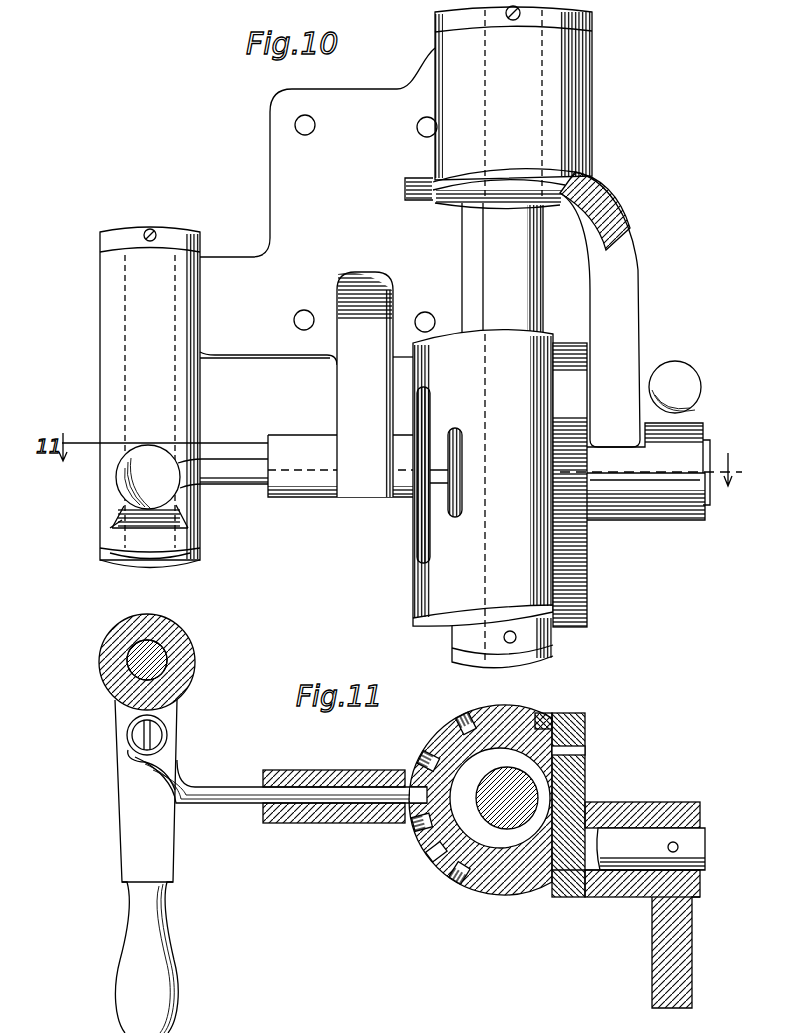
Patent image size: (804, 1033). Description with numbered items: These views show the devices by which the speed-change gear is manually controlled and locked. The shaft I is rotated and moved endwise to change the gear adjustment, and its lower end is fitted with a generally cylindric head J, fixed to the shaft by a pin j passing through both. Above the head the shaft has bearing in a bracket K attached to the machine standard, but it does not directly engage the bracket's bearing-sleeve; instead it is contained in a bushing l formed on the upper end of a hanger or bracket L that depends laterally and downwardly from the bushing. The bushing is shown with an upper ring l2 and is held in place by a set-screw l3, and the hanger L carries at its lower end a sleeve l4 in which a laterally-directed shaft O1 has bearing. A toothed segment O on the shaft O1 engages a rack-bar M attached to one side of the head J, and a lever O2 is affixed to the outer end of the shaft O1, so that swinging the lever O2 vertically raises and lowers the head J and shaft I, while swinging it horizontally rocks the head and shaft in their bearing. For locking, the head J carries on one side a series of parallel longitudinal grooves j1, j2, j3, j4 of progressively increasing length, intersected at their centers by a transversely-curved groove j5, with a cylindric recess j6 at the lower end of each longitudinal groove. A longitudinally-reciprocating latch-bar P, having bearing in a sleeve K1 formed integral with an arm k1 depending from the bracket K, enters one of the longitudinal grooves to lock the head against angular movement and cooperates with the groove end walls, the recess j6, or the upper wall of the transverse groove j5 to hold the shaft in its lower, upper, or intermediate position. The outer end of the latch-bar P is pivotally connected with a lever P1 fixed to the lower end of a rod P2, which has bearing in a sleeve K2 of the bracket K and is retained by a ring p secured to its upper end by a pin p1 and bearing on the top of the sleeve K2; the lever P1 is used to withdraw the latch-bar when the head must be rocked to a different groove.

In FIG. 10, the cylindrical bearing h is at (580, 92).
In FIG. 10, the bracket K is at (318, 206).
In FIG. 10, the sleeve K1 is at (313, 447).
In FIG. 11, the sleeve K1 is at (283, 772).
In FIG. 10, the sleeve K2 is at (100, 352).
In FIG. 11, the sleeve K2 is at (188, 690).
In FIG. 10, the arm k1 is at (365, 384).
In FIG. 10, the bushing l is at (445, 186).
In FIG. 10, the cap band l2 is at (435, 31).
In FIG. 10, the set-screw l3 is at (513, 22).
In FIG. 10, the sleeve l4 is at (620, 505).
In FIG. 11, the sleeve l4 is at (597, 893).
In FIG. 10, the hanger or bracket L is at (630, 250).
In FIG. 10, the shaft I is at (502, 269).
In FIG. 11, the shaft I is at (490, 812).
In FIG. 10, the head J is at (483, 495).
In FIG. 11, the head J is at (504, 893).
In FIG. 10, the pin j is at (478, 656).
In FIG. 10, the longitudinal groove j1 is at (463, 449).
In FIG. 11, the longitudinal groove j1 is at (466, 883).
In FIG. 10, the longitudinal groove j2 is at (430, 420).
In FIG. 11, the longitudinal groove j2 is at (425, 832).
In FIG. 11, the longitudinal groove j3 is at (427, 768).
In FIG. 11, the longitudinal groove j4 is at (458, 724).
In FIG. 10, the transversely-curved groove j5 is at (440, 488).
In FIG. 11, the transversely-curved groove j5 is at (437, 842).
In FIG. 11, the cylindric recess j6 is at (488, 838).
In FIG. 10, the rack-bar M is at (587, 601).
In FIG. 11, the rack-bar M is at (585, 713).
In FIG. 10, the segment O is at (580, 550).
In FIG. 11, the segment O is at (575, 775).
In FIG. 11, the shaft O1 is at (618, 838).
In FIG. 10, the lever O2 is at (683, 437).
In FIG. 11, the lever O2 is at (674, 841).
In FIG. 10, the latch-bar P is at (228, 484).
In FIG. 11, the latch-bar P is at (235, 805).
In FIG. 10, the lever P1 is at (122, 478).
In FIG. 11, the lever P1 is at (124, 818).
In FIG. 10, the rod P2 is at (125, 570).
In FIG. 11, the rod P2 is at (187, 645).
In FIG. 10, the ring p is at (112, 243).
In FIG. 10, the pin p1 is at (200, 232).